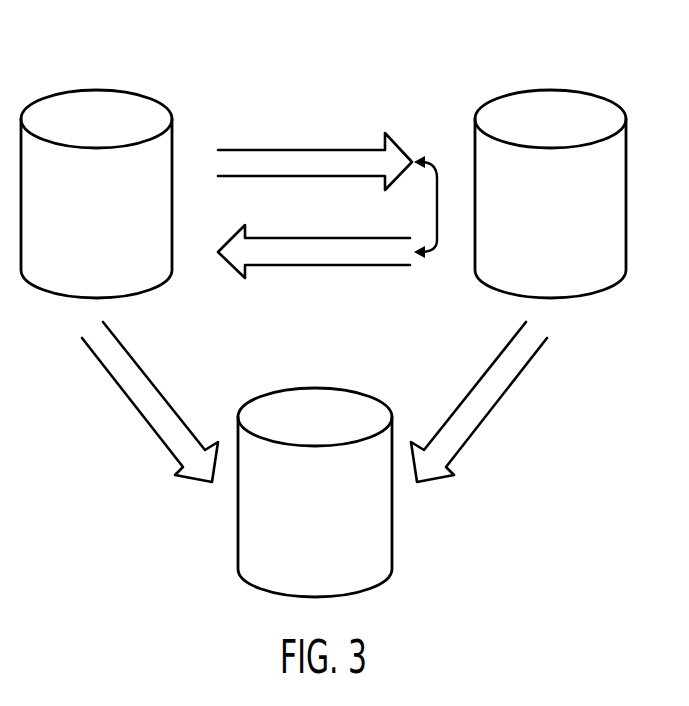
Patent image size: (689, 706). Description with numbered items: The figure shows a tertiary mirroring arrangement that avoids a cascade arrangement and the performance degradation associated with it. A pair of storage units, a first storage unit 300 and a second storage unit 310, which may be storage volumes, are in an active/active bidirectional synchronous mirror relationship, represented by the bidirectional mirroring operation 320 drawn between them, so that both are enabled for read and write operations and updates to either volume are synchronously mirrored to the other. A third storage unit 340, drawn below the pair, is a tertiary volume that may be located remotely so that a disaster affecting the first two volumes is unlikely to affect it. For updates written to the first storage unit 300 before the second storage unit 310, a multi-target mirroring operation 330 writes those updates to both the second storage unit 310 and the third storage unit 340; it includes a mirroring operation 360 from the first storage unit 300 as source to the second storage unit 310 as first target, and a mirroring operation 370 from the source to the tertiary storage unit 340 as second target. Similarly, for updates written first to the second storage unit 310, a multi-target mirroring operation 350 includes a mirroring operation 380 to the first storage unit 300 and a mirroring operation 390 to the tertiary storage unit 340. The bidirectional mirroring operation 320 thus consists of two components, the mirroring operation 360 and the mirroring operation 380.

The first storage unit 300 is at (97, 90).
The second storage unit 310 is at (548, 89).
The bidirectional mirroring operation 320 is at (437, 207).
The multi-target mirroring operation 330 is at (276, 186).
The third storage unit 340 is at (315, 388).
The multi-target mirroring operation 350 is at (467, 381).
The mirroring operation 360 is at (233, 149).
The mirroring operation 370 is at (131, 400).
The mirroring operation 380 is at (298, 238).
The mirroring operation 390 is at (497, 400).